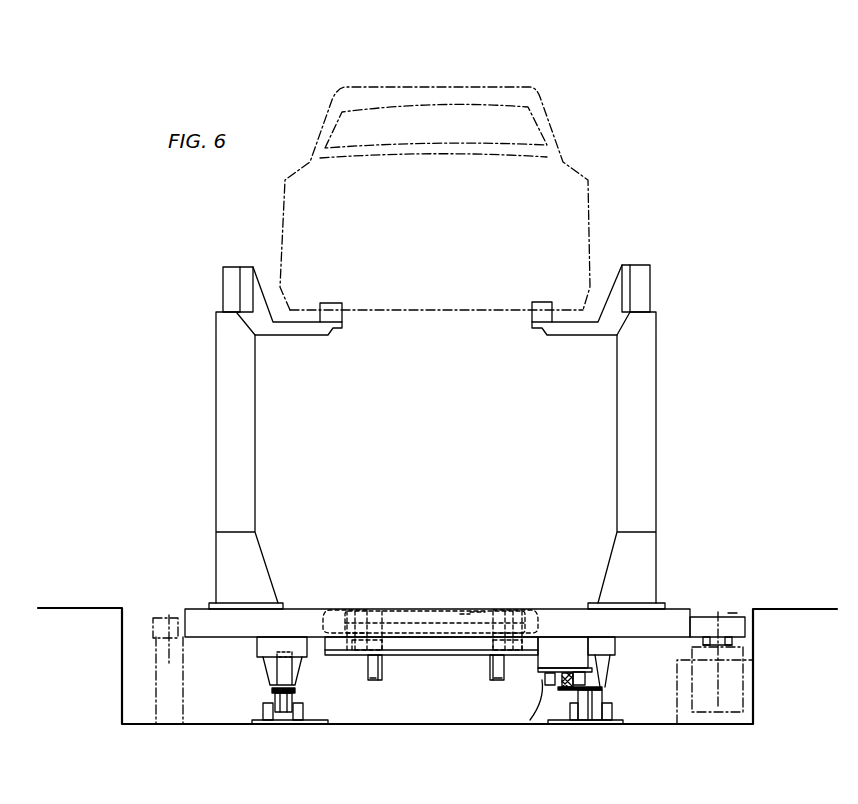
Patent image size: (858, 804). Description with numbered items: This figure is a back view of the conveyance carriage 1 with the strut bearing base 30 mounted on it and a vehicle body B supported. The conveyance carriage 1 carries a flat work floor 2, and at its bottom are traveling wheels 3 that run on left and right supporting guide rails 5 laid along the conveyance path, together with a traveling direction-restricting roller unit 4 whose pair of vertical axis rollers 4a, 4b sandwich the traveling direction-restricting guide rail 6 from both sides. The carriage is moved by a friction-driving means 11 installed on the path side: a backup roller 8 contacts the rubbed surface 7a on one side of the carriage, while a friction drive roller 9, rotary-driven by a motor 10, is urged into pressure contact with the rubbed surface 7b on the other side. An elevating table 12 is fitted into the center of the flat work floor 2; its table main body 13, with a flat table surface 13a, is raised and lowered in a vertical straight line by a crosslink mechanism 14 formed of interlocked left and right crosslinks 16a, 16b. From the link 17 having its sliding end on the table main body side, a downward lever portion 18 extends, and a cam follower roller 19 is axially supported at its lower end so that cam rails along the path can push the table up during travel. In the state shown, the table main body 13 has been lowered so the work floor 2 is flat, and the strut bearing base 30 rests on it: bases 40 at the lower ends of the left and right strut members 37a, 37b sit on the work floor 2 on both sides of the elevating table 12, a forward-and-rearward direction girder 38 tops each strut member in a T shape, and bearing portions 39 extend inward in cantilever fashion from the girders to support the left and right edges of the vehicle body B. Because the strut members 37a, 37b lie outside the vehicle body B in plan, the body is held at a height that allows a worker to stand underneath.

The vehicle body B is at (570, 163).
The conveyance carriage 1 is at (295, 608).
The flat work floor 2 is at (431, 595).
The flat table surface 13a is at (431, 646).
The traveling wheels 3 is at (280, 677).
The traveling direction-restricting roller unit 4 is at (585, 664).
The vertical axis roller 4a is at (550, 680).
The vertical axis roller 4b is at (585, 680).
The supporting guide rail 5 is at (272, 690).
The traveling direction-restricting guide rail 6 is at (565, 693).
The rubbed surface 7a is at (185, 620).
The rubbed surface 7b is at (690, 620).
The backup roller 8 is at (153, 628).
The friction drive roller 9 is at (738, 625).
The motor 10 is at (752, 689).
The friction-driving means 11 is at (732, 615).
The elevating table 12 is at (466, 608).
The table main body 13 is at (478, 612).
The crosslink mechanism 14 is at (368, 608).
The crosslink 16a is at (325, 617).
The crosslink 16b is at (537, 617).
The link 17 is at (405, 617).
The lever portion 18 is at (382, 673).
The cam follower roller 19 is at (375, 680).
The strut bearing base 30 is at (430, 418).
The strut member 37a is at (226, 405).
The strut member 37b is at (648, 397).
The forward-and-rearward direction girder 38 is at (232, 280).
The bearing portion 39 is at (328, 307).
The base 40 is at (240, 603).